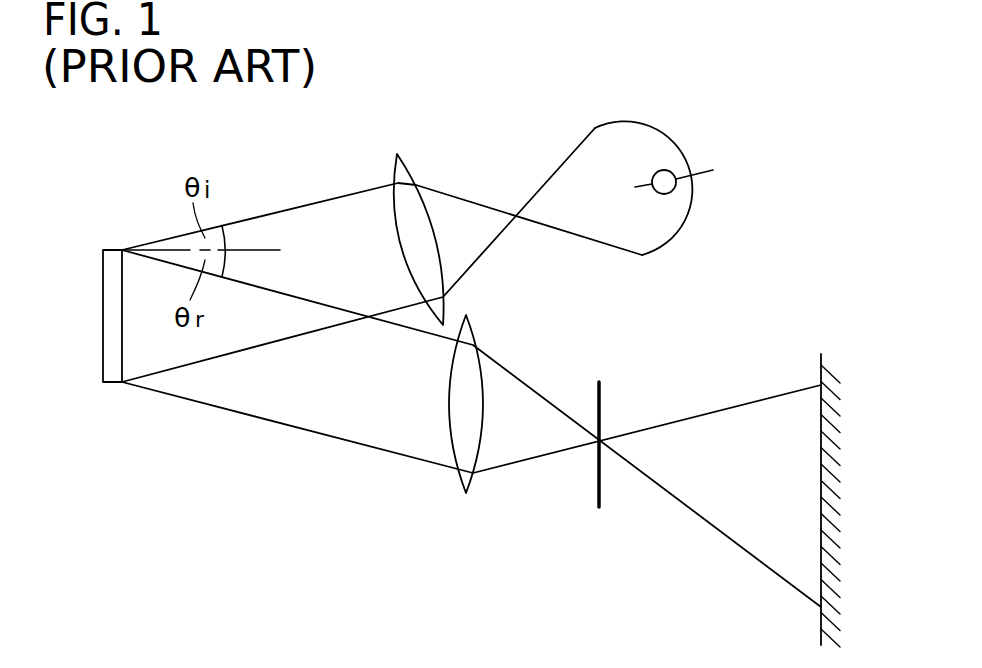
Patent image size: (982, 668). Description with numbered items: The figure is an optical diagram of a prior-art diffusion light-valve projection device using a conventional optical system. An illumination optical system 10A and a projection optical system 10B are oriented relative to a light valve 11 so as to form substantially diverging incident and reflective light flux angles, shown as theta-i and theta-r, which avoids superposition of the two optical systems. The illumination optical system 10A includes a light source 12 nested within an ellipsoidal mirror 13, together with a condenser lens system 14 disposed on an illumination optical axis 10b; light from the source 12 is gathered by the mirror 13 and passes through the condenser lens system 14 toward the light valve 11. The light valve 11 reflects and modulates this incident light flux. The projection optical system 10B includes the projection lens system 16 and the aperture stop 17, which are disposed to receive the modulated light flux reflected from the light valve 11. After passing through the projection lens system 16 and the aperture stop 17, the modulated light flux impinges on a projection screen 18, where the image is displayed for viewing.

The illumination optical system 10A is at (285, 183).
The projection optical system 10B is at (358, 510).
The illumination optical axis 10b is at (700, 168).
The light valve 11 is at (110, 303).
The light source 12 is at (670, 195).
The ellipsoidal mirror 13 is at (670, 238).
The condenser lens system 14 is at (418, 228).
The projection lens system 16 is at (458, 426).
The aperture stop 17 is at (597, 473).
The projection screen 18 is at (821, 508).